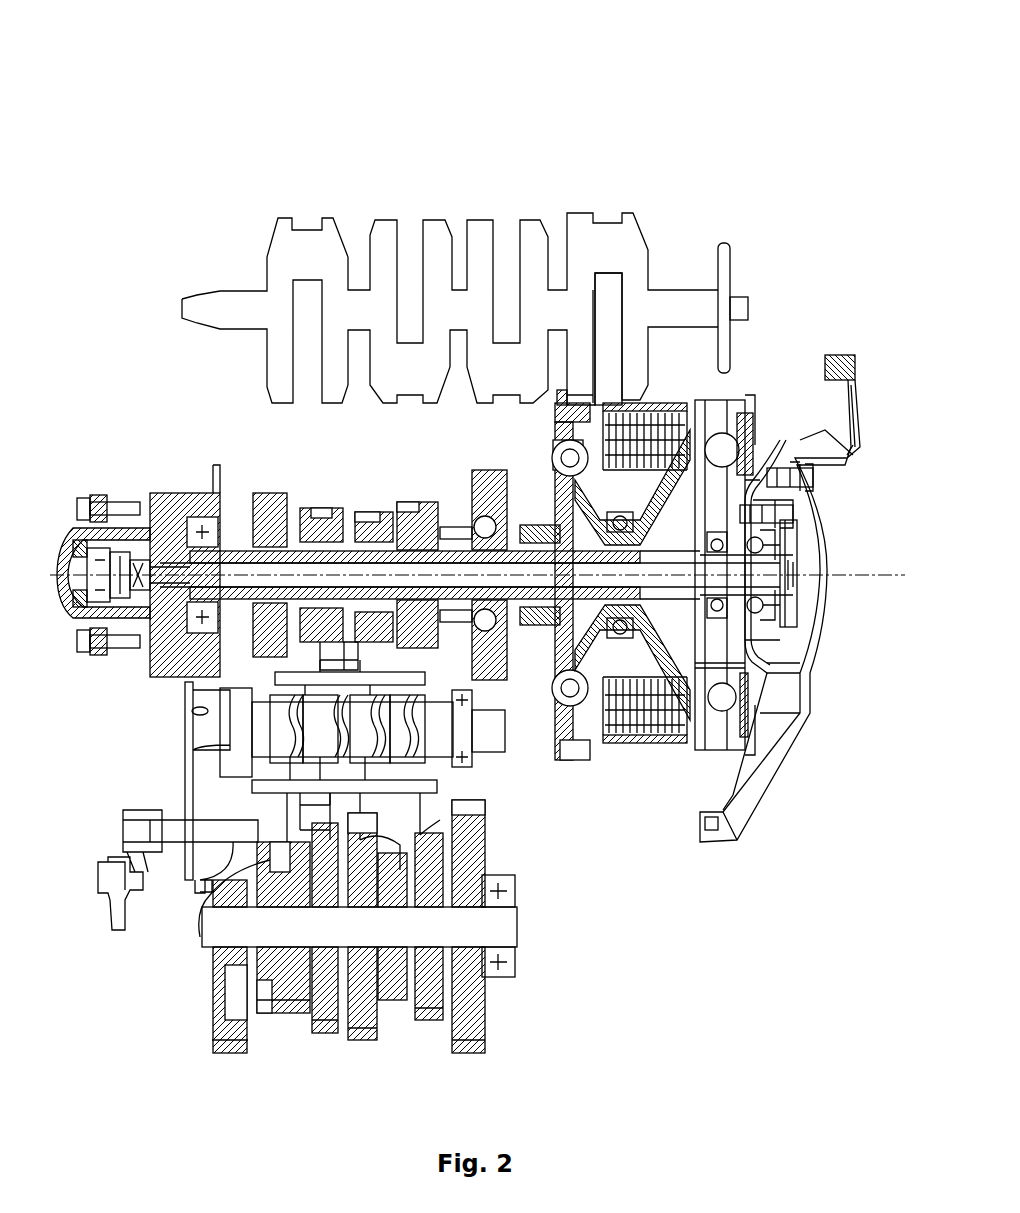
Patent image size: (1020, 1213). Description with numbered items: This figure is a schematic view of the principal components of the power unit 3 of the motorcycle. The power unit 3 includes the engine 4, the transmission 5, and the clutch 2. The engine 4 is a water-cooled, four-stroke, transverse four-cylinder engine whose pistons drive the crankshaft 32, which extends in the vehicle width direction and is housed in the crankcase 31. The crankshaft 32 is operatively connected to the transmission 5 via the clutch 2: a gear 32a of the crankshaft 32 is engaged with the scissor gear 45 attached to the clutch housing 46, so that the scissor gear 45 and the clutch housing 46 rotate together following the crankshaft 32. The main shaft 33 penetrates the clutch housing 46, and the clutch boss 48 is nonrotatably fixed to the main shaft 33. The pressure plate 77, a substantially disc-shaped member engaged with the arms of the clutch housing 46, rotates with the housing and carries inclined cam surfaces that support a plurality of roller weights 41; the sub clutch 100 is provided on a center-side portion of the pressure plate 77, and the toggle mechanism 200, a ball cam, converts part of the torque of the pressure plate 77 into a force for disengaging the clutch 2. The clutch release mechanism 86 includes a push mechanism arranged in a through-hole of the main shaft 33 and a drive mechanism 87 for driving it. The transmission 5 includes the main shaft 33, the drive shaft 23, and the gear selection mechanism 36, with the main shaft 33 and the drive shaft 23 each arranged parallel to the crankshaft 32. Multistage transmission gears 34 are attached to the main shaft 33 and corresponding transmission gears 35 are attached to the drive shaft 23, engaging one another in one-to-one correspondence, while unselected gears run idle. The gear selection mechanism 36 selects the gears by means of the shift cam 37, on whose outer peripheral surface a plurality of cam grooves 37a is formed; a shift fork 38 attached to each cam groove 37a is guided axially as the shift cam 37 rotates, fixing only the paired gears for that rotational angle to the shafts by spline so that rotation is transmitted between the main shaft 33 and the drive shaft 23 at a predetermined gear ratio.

The clutch 2 is at (775, 355).
The power unit 3 is at (655, 100).
The engine 4 is at (465, 261).
The transmission 5 is at (600, 847).
The drive shaft 23 is at (520, 925).
The crankcase 31 is at (775, 780).
The crankshaft 32 is at (531, 225).
The gear 32a is at (625, 378).
The main shaft 33 is at (445, 560).
The transmission gears 34 is at (393, 505).
The transmission gears 35 is at (490, 840).
The gear selection mechanism 36 is at (170, 713).
The shift cam 37 is at (270, 690).
The cam grooves 37a is at (395, 715).
The shift fork 38 is at (415, 800).
The roller weight 41 is at (699, 614).
The scissor gear 45 is at (578, 760).
The clutch housing 46 is at (658, 745).
The clutch boss 48 is at (636, 680).
The pressure plate 77 is at (705, 722).
The clutch release mechanism 86 is at (45, 540).
The drive mechanism 87 is at (120, 485).
The sub clutch 100 is at (712, 640).
The toggle mechanism 200 is at (827, 541).